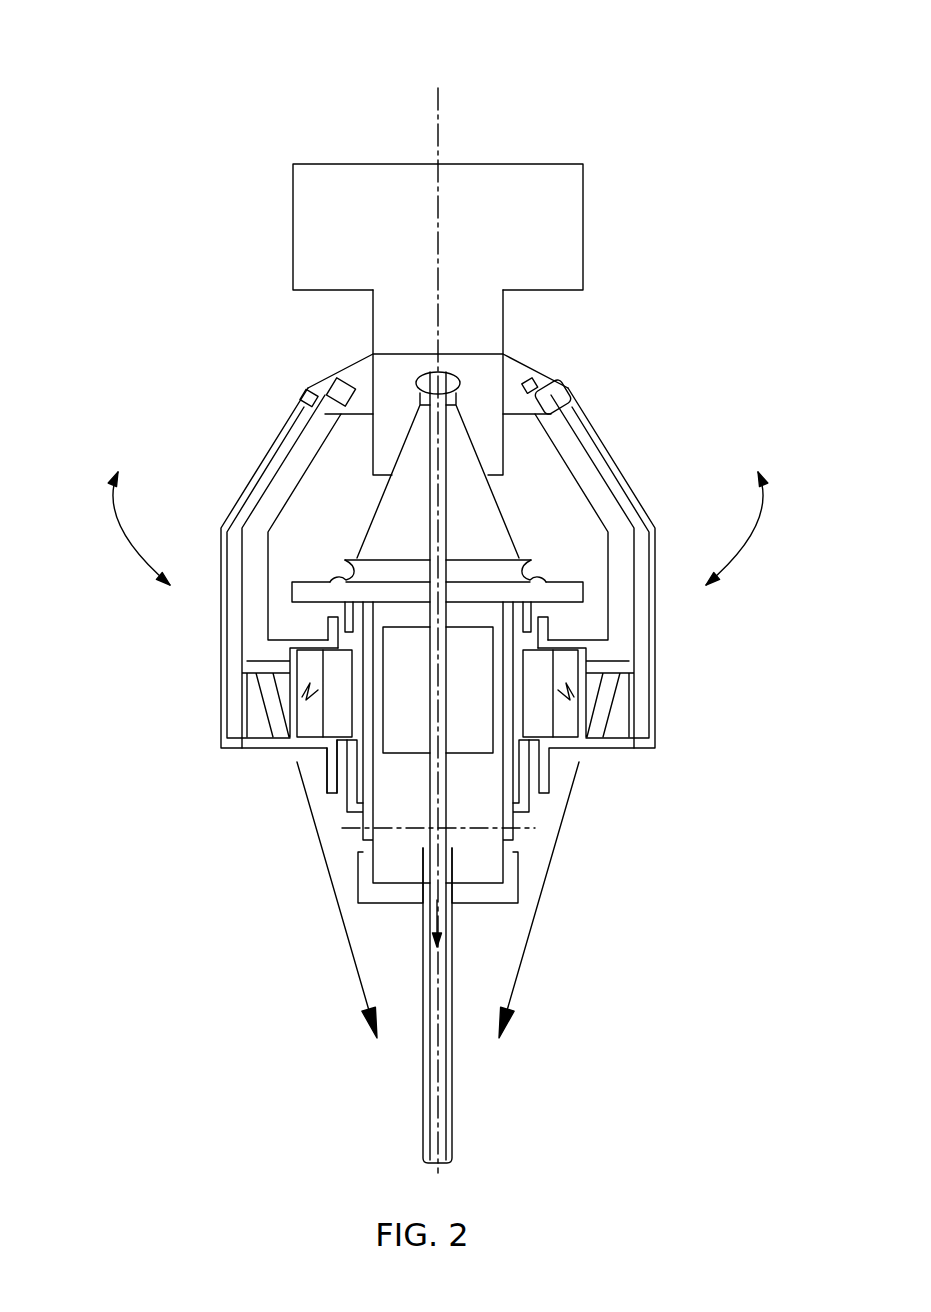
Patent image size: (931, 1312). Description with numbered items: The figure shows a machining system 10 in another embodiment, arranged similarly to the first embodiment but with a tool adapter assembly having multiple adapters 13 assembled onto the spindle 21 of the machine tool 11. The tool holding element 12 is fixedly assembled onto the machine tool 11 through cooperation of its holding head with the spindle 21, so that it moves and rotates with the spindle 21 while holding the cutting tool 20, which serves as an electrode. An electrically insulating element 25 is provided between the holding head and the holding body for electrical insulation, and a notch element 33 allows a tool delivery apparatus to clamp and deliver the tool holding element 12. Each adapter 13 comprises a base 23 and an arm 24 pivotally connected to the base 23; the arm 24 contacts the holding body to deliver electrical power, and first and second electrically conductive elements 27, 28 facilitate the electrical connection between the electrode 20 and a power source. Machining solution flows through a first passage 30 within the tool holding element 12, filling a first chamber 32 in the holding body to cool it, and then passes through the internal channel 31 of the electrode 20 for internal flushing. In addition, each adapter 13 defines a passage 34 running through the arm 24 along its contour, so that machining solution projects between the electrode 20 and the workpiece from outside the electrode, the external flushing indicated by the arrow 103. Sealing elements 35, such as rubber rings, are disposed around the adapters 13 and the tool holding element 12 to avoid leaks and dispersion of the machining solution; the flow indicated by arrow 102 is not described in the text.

The machining system 10 is at (168, 56).
The machine tool 11 is at (344, 160).
The spindle 21 is at (292, 228).
The base 23 is at (530, 372).
The adapter 13 is at (263, 458).
The passage 34 is at (233, 628).
The arm 24 is at (642, 625).
The first passage 30 is at (433, 583).
The notch element 33 is at (507, 572).
The electrically insulating element 25 is at (315, 592).
The first chamber 32 is at (426, 695).
The second electrically conductive element 28 is at (373, 705).
The first electrically conductive element 27 is at (543, 727).
The tool holding element 12 is at (385, 787).
The sealing element 35 is at (548, 773).
The cutting tool 20 is at (423, 1118).
The internal channel 31 is at (447, 1128).
The fluid flow direction 102 is at (440, 912).
The arrow 103 is at (533, 920).